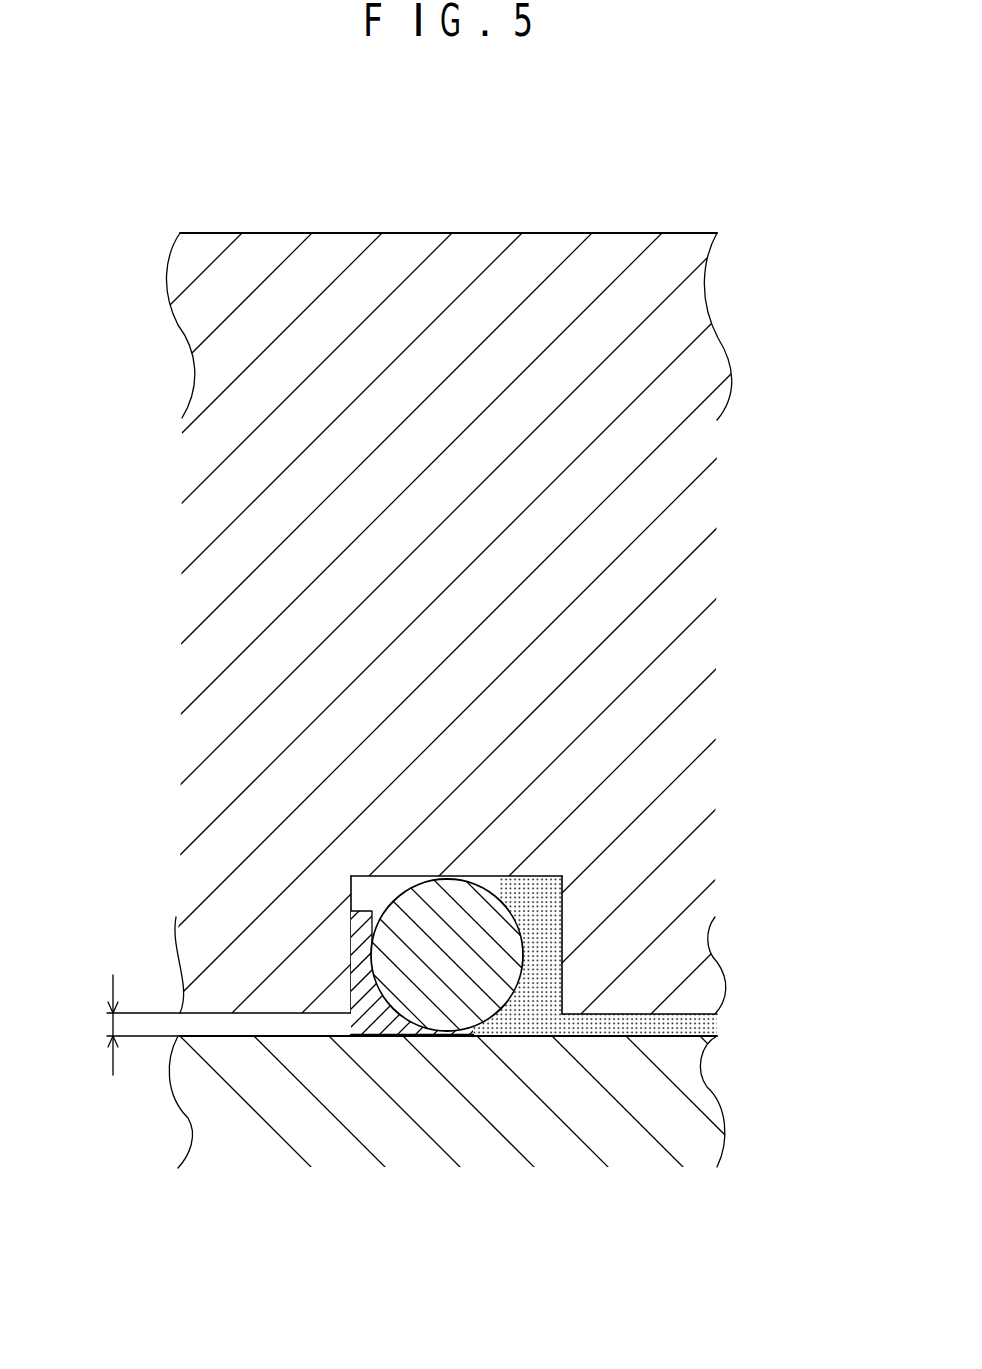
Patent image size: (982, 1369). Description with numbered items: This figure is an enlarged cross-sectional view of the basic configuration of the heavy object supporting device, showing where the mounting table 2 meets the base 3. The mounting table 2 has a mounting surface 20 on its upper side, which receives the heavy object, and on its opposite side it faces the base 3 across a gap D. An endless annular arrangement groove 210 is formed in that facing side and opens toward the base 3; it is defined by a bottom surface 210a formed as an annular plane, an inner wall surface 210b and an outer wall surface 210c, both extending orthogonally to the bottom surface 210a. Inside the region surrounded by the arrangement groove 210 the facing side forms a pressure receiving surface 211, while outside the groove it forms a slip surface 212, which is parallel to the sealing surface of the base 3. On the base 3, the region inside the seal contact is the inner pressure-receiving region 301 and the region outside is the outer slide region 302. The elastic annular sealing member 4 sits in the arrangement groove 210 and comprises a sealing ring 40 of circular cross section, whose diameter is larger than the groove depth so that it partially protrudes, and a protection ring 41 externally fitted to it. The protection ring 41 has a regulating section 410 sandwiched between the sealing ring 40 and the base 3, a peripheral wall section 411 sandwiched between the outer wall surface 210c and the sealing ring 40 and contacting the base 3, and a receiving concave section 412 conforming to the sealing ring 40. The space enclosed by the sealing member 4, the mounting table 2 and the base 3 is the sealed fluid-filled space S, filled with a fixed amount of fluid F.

The mounting table 2 is at (438, 572).
The mounting surface 20 is at (215, 233).
The arrangement groove 210 is at (452, 855).
The bottom surface 210a is at (502, 877).
The inner wall surface 210b is at (562, 938).
The outer wall surface 210c is at (352, 900).
The pressure receiving surface 211 is at (660, 1013).
The slip surface 212 is at (277, 1013).
The base 3 is at (454, 1136).
The inner pressure-receiving region 301 is at (660, 1034).
The outer slide region 302 is at (237, 1037).
The sealing member 4 is at (427, 1095).
The sealing ring 40 is at (447, 1073).
The protection ring 41 is at (414, 1091).
The regulating section 410 is at (433, 1037).
The peripheral wall section 411 is at (358, 947).
The receiving concave section 412 is at (412, 1020).
The gap D is at (112, 1026).
The fluid F is at (525, 1037).
The fluid-filled space S is at (597, 1037).